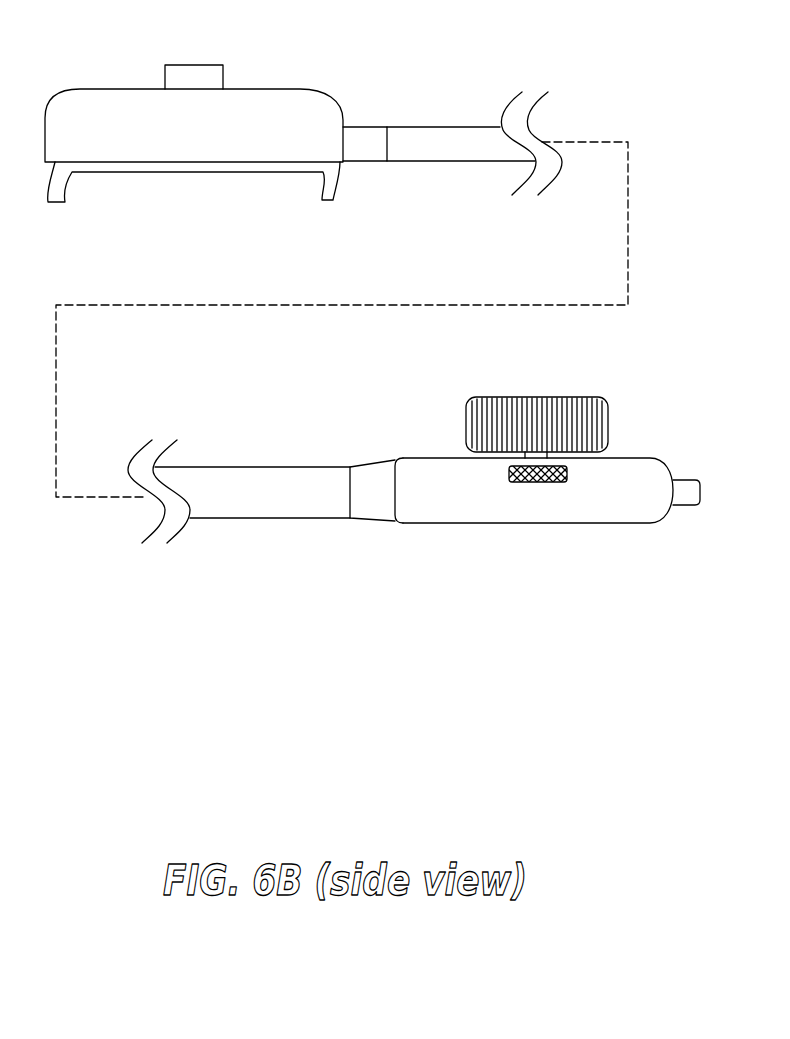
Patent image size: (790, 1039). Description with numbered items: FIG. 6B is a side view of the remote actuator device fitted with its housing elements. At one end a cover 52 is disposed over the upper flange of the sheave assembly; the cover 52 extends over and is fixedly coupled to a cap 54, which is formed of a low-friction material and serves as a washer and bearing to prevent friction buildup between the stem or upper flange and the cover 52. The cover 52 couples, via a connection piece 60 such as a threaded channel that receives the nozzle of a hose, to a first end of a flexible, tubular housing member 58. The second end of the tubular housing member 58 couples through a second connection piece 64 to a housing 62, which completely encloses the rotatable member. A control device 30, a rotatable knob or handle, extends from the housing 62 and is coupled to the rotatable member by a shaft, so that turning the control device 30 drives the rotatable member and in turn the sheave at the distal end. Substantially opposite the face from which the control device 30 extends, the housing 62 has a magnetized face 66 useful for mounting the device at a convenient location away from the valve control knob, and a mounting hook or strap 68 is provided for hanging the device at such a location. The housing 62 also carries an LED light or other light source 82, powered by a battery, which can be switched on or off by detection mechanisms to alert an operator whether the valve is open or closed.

The control device 30 is at (497, 397).
The cover 52 is at (297, 87).
The cap 54 is at (187, 65).
The tubular housing member 58 is at (420, 127).
The connection piece 60 is at (357, 161).
The housing 62 is at (430, 457).
The second connection piece 64 is at (362, 520).
The magnetized face 66 is at (605, 531).
The mounting hook or strap 68 is at (690, 478).
The LED light or other light source 82 is at (539, 483).